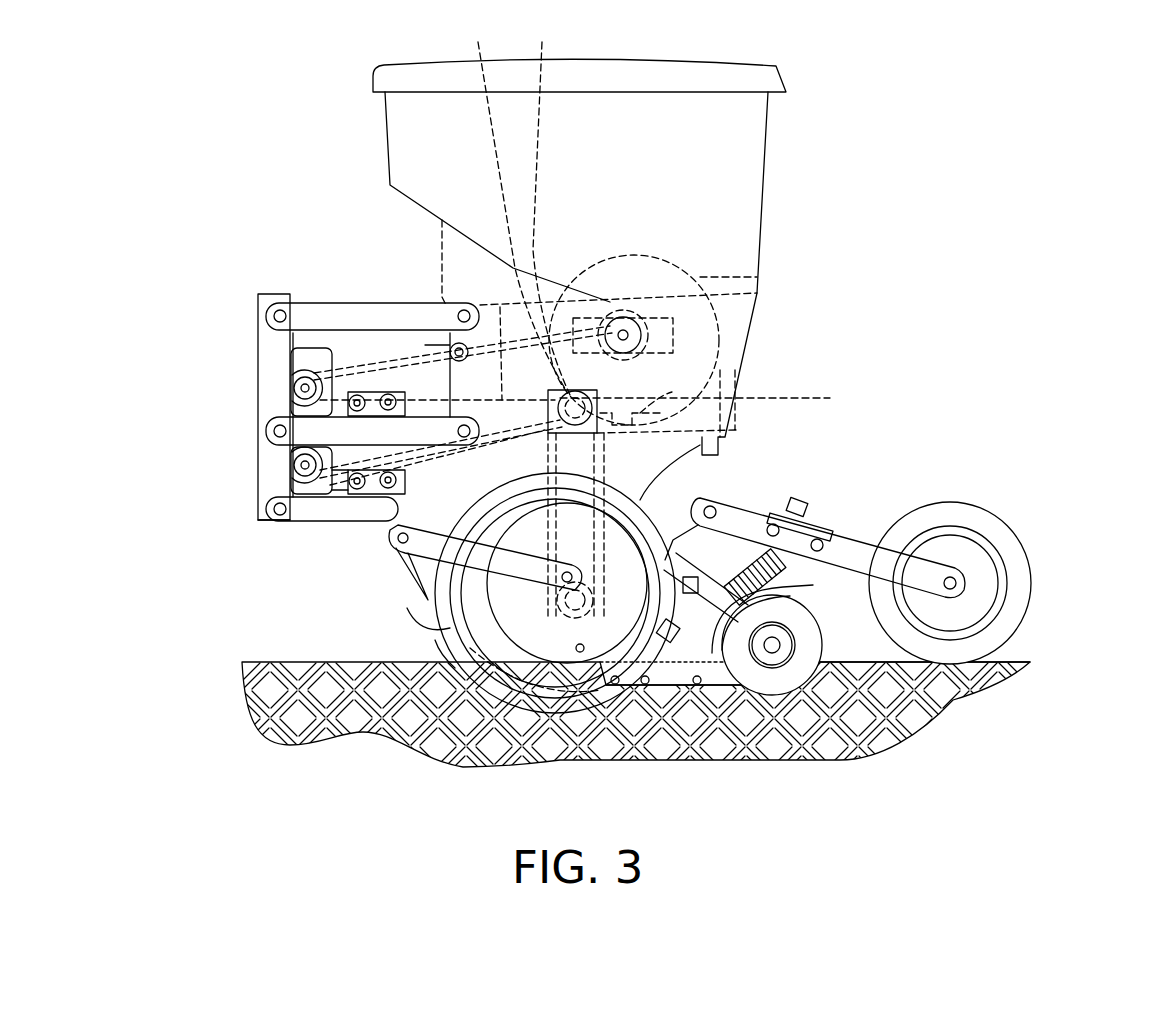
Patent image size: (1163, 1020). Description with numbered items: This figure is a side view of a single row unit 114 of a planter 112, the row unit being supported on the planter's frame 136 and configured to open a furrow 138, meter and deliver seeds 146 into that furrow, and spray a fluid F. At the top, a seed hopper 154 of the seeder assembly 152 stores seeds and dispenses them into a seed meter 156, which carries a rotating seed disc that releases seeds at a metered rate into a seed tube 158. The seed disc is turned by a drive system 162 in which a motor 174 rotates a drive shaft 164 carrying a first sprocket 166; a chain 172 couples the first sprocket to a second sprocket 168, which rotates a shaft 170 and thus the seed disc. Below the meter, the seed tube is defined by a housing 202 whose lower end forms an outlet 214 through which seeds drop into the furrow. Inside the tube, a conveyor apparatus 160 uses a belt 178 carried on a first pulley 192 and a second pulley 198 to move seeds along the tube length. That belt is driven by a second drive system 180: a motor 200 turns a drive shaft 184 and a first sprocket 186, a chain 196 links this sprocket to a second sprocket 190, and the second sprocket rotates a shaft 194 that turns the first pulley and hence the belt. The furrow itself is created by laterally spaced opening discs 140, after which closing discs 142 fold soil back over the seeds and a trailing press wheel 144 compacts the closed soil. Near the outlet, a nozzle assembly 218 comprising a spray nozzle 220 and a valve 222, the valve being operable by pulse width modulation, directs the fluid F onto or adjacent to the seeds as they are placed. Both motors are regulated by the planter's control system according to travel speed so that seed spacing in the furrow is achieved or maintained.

The planter 112 is at (687, 233).
The row unit 114 is at (975, 125).
The frame 136 is at (320, 300).
The furrow 138 is at (600, 690).
The opening discs 140 is at (408, 605).
The closing discs 142 is at (813, 585).
The press wheel 144 is at (985, 515).
The seeds 146 is at (565, 660).
The seeder assembly 152 is at (360, 183).
The seed hopper 154 is at (765, 150).
The seed meter 156 is at (745, 285).
The seed tube 158 is at (720, 432).
The conveyor apparatus 160 is at (700, 382).
The drive system 162 is at (398, 334).
The drive shaft 164 is at (295, 388).
The first sprocket 166 is at (286, 433).
The second sprocket 168 is at (712, 358).
The shaft 170 is at (640, 325).
The chain 172 is at (356, 368).
The motor 174 is at (298, 345).
The belt 178 is at (760, 720).
The drive system 180 is at (250, 522).
The drive shaft 184 is at (295, 468).
The first sprocket 186 is at (300, 485).
The second sprocket 190 is at (511, 202).
The first pulley 192 is at (543, 203).
The shaft 194 is at (716, 397).
The chain 196 is at (390, 550).
The second pulley 198 is at (468, 650).
The motor 200 is at (300, 520).
The housing 202 is at (620, 500).
The outlet 214 is at (480, 630).
The nozzle assembly 218 is at (708, 578).
The spray nozzle 220 is at (565, 612).
The valve 222 is at (720, 497).
The fluid F is at (645, 690).